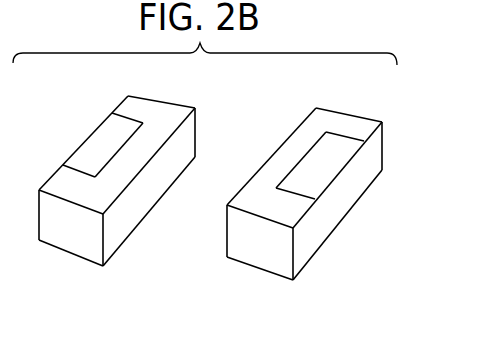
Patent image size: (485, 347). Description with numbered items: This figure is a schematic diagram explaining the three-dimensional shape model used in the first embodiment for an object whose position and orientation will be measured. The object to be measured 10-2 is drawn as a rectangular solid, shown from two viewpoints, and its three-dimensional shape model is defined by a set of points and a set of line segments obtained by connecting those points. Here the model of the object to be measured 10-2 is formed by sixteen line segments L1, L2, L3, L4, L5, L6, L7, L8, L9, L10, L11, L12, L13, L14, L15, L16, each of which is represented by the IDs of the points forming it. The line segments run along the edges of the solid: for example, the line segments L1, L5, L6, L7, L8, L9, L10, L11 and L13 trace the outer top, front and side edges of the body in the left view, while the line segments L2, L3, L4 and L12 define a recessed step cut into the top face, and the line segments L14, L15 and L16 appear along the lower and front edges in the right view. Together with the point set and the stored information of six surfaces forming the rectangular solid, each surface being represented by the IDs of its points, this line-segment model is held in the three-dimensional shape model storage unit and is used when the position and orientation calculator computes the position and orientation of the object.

The object to be measured 10-2 is at (209, 207).
The line segment L1 is at (210, 162).
The line segment L2 is at (211, 157).
The line segment L3 is at (210, 155).
The line segment L4 is at (213, 158).
The line segment L5 is at (210, 159).
The line segment L6 is at (211, 182).
The line segment L7 is at (149, 211).
The line segment L8 is at (70, 257).
The line segment L9 is at (209, 181).
The line segment L10 is at (89, 240).
The line segment L11 is at (149, 161).
The line segment L12 is at (177, 161).
The line segment L13 is at (210, 158).
The line segment L14 is at (337, 225).
The line segment L15 is at (306, 254).
The line segment L16 is at (256, 273).